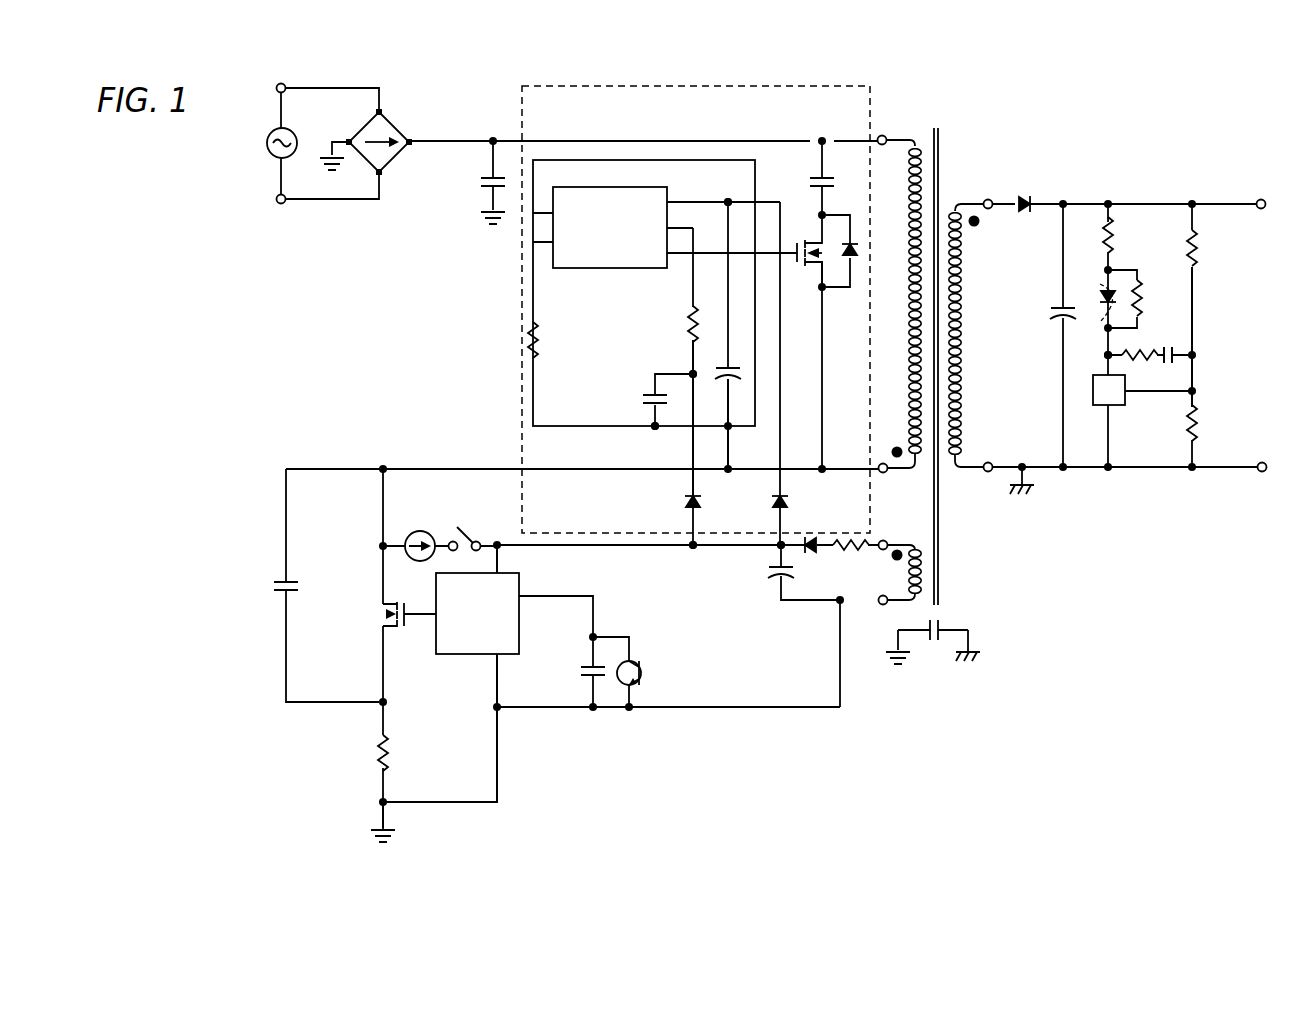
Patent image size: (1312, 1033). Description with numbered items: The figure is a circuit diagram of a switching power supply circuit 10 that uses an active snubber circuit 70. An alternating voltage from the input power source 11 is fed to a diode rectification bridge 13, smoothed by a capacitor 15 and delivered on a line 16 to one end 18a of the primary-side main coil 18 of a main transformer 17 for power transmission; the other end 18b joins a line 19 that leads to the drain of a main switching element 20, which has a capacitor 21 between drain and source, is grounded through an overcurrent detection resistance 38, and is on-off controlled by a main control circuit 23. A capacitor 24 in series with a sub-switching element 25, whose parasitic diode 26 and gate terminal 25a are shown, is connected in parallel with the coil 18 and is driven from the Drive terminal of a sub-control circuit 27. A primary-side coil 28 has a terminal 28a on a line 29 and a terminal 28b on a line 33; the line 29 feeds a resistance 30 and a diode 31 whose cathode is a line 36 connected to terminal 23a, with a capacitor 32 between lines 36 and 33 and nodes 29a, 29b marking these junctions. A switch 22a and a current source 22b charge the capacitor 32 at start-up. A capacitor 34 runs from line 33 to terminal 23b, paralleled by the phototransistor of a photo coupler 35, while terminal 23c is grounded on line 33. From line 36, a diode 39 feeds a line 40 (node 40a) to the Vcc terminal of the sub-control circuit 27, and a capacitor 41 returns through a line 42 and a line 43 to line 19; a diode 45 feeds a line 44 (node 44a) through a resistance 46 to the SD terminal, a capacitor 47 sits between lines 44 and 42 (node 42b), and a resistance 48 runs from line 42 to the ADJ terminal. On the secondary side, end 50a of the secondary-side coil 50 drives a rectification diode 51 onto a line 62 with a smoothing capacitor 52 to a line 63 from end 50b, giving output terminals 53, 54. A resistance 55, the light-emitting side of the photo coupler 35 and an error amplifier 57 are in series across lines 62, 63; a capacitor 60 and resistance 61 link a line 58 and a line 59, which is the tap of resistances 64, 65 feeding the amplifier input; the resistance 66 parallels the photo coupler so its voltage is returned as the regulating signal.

The switching power supply circuit 10 is at (1072, 104).
The AC power source 11 is at (267, 143).
The diode rectification bridge 13 is at (387, 120).
The capacitor for smoothing 15 is at (481, 184).
The line 16 is at (703, 140).
The main transformer for power transmission 17 is at (952, 146).
The primary-side main coil 18 is at (914, 310).
The one end of the primary-side main coil 18a is at (884, 136).
The other end of the primary-side main coil 18b is at (883, 472).
The line 19 is at (597, 472).
The main switching element 20 is at (376, 598).
The capacitor 21 is at (280, 578).
The switch 22a is at (460, 524).
The current source 22b is at (424, 531).
The main control circuit 23 is at (449, 656).
The terminal of the main control circuit 23a is at (499, 572).
The terminal of the main control circuit 23b is at (520, 601).
The terminal of the main control circuit 23c is at (500, 656).
The capacitor 24 is at (836, 180).
The sub-switching element 25 is at (801, 240).
The gate terminal of the sub-switching element 25a is at (801, 270).
The diode 26 is at (855, 290).
The sub-control circuit 27 is at (606, 270).
The primary-side coil 28 is at (925, 587).
The terminal of the primary-side coil 28a is at (885, 544).
The terminal of the primary-side coil 28b is at (880, 606).
The line 29 is at (849, 541).
The node 29a is at (780, 540).
The node 29b is at (693, 548).
The resistance 30 is at (852, 549).
The diode 31 is at (810, 553).
The capacitor 32 is at (774, 573).
The line 33 is at (502, 756).
The capacitor 34 is at (583, 672).
The photo coupler 35 is at (631, 664).
The line 36 is at (716, 548).
The overcurrent detection resistance 38 is at (390, 751).
The diode 39 is at (787, 499).
The line 40 is at (700, 198).
The node 40a is at (723, 204).
The capacitor 41 is at (723, 369).
The line 42 is at (717, 423).
The node 42b is at (651, 424).
The line 43 is at (729, 448).
The line 44 is at (690, 458).
The node 44a is at (690, 372).
The diode 45 is at (688, 498).
The resistance 46 is at (694, 304).
The capacitor 47 is at (651, 393).
The resistance 48 is at (528, 341).
The secondary-side coil 50 is at (962, 303).
The one end of the secondary-side coil 50a is at (988, 204).
The other end of the secondary-side coil 50b is at (988, 462).
The diode for rectification 51 is at (1022, 200).
The capacitor for smoothing 52 is at (1058, 321).
The output terminal (positive terminal) 53 is at (1262, 202).
The output terminal (negative terminal) 54 is at (1263, 472).
The resistance 55 is at (1118, 246).
The error amplifier 57 is at (1098, 406).
The line 58 is at (1106, 355).
The line 59 is at (1194, 334).
The capacitor 60 is at (1177, 348).
The resistance 61 is at (1146, 352).
The line 62 is at (1152, 204).
The line 63 is at (1151, 471).
The resistance 64 is at (1200, 251).
The resistance 65 is at (1198, 432).
The resistance 66 is at (1140, 288).
The active snubber circuit 70 is at (522, 100).